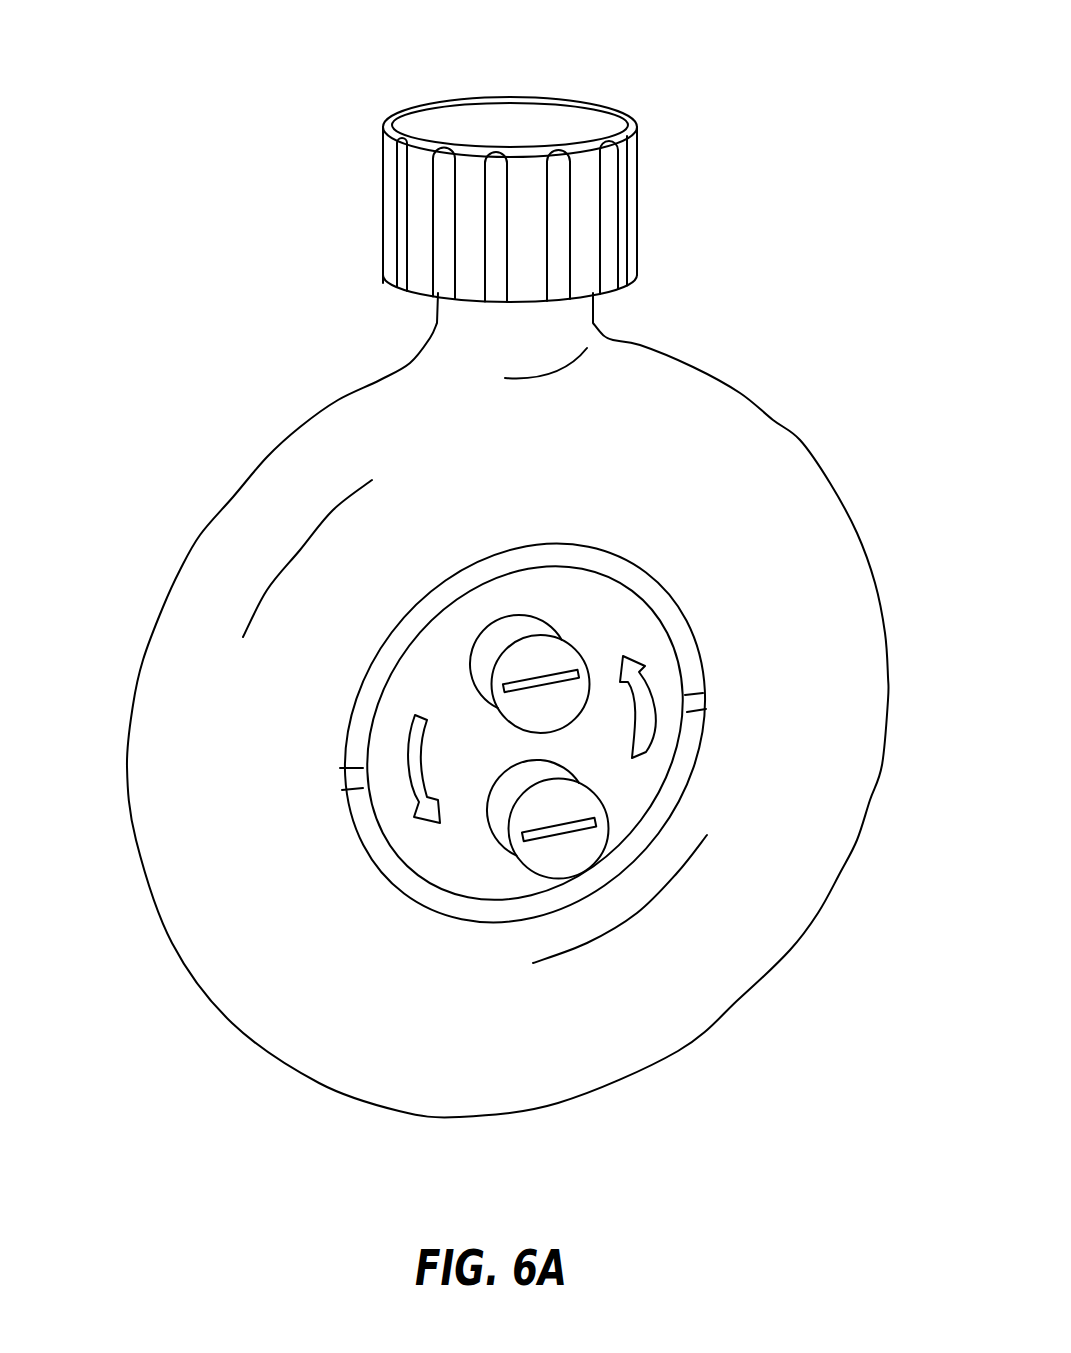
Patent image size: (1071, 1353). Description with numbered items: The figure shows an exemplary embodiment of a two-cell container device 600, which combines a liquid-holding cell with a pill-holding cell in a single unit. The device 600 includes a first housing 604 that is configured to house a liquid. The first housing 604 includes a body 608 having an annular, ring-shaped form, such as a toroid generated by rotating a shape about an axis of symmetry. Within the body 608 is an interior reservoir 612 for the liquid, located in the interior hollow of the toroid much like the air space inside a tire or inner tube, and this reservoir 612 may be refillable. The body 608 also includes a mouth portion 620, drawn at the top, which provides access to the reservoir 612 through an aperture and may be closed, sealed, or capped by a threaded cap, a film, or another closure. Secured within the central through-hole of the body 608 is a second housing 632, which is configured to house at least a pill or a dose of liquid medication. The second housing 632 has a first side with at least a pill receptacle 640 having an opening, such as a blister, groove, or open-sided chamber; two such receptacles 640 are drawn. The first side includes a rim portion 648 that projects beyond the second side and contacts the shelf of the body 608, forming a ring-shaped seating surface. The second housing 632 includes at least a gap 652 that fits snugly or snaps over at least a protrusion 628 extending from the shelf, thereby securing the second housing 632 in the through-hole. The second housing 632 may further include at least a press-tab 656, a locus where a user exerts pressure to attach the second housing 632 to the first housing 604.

The two-cell container device 600 is at (858, 62).
The first housing 604 is at (683, 380).
The body 608 is at (787, 450).
The interior reservoir 612 is at (200, 580).
The mouth portion 620 is at (425, 200).
The protrusion 628 is at (700, 698).
The second housing 632 is at (605, 612).
The pill receptacle 640 is at (530, 657).
The rim portion 648 is at (690, 650).
The gap 652 is at (522, 741).
The press-tab 656 is at (643, 745).